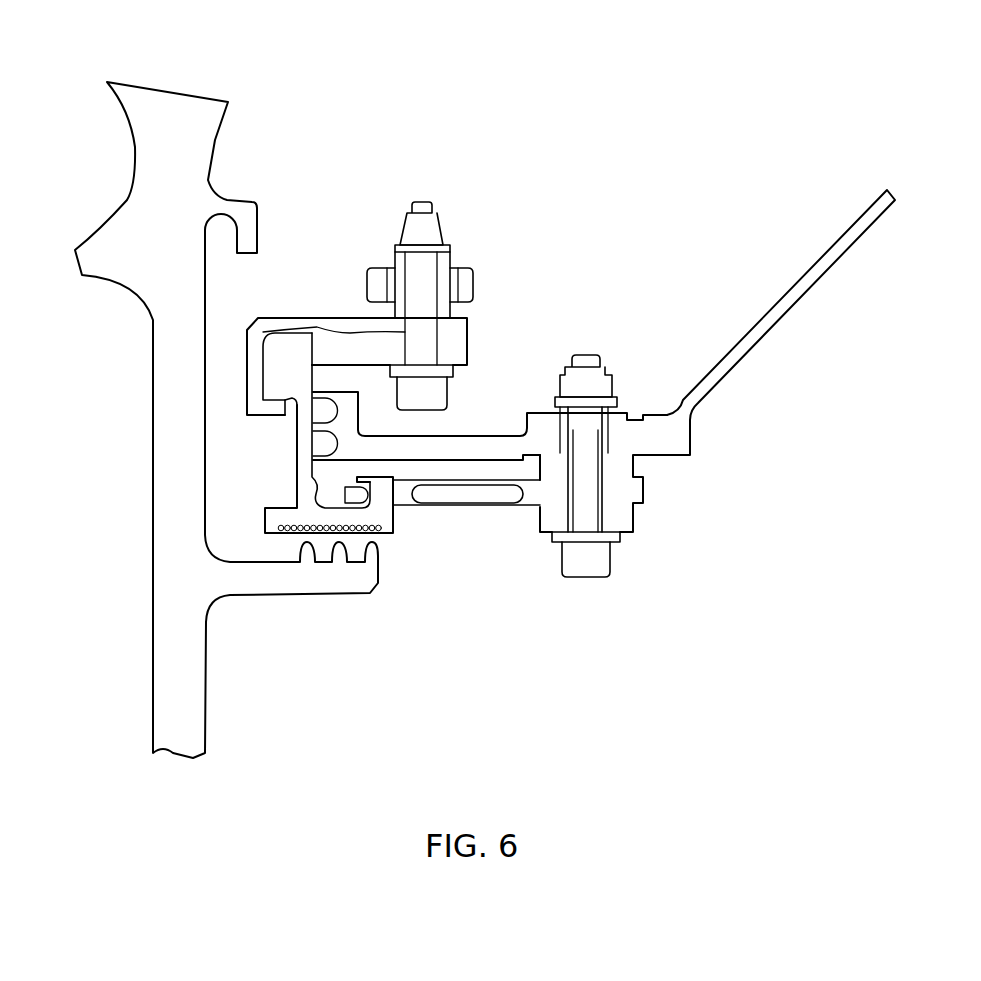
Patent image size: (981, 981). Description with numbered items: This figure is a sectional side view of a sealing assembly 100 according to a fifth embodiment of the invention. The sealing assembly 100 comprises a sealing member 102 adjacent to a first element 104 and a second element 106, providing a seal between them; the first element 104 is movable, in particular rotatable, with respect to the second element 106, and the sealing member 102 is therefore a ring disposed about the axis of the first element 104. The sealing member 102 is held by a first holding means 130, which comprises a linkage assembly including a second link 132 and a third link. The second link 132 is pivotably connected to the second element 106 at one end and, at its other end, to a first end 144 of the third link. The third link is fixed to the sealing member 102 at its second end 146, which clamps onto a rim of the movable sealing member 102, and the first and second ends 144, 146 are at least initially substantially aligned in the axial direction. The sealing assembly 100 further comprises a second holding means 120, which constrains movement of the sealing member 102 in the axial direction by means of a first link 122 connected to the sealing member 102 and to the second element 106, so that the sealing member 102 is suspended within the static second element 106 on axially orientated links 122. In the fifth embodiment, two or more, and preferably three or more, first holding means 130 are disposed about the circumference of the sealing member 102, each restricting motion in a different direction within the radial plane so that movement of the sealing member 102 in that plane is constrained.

The sealing assembly 100 is at (519, 696).
The sealing member 102 is at (305, 465).
The first element 104 is at (167, 370).
The second element 106 is at (478, 445).
The second holding means 120 is at (509, 537).
The first link 122 is at (473, 495).
The first holding means 130 is at (477, 220).
The second link 132 is at (468, 287).
The first end of the third link 144 is at (457, 347).
The second end of the third link 146 is at (282, 353).